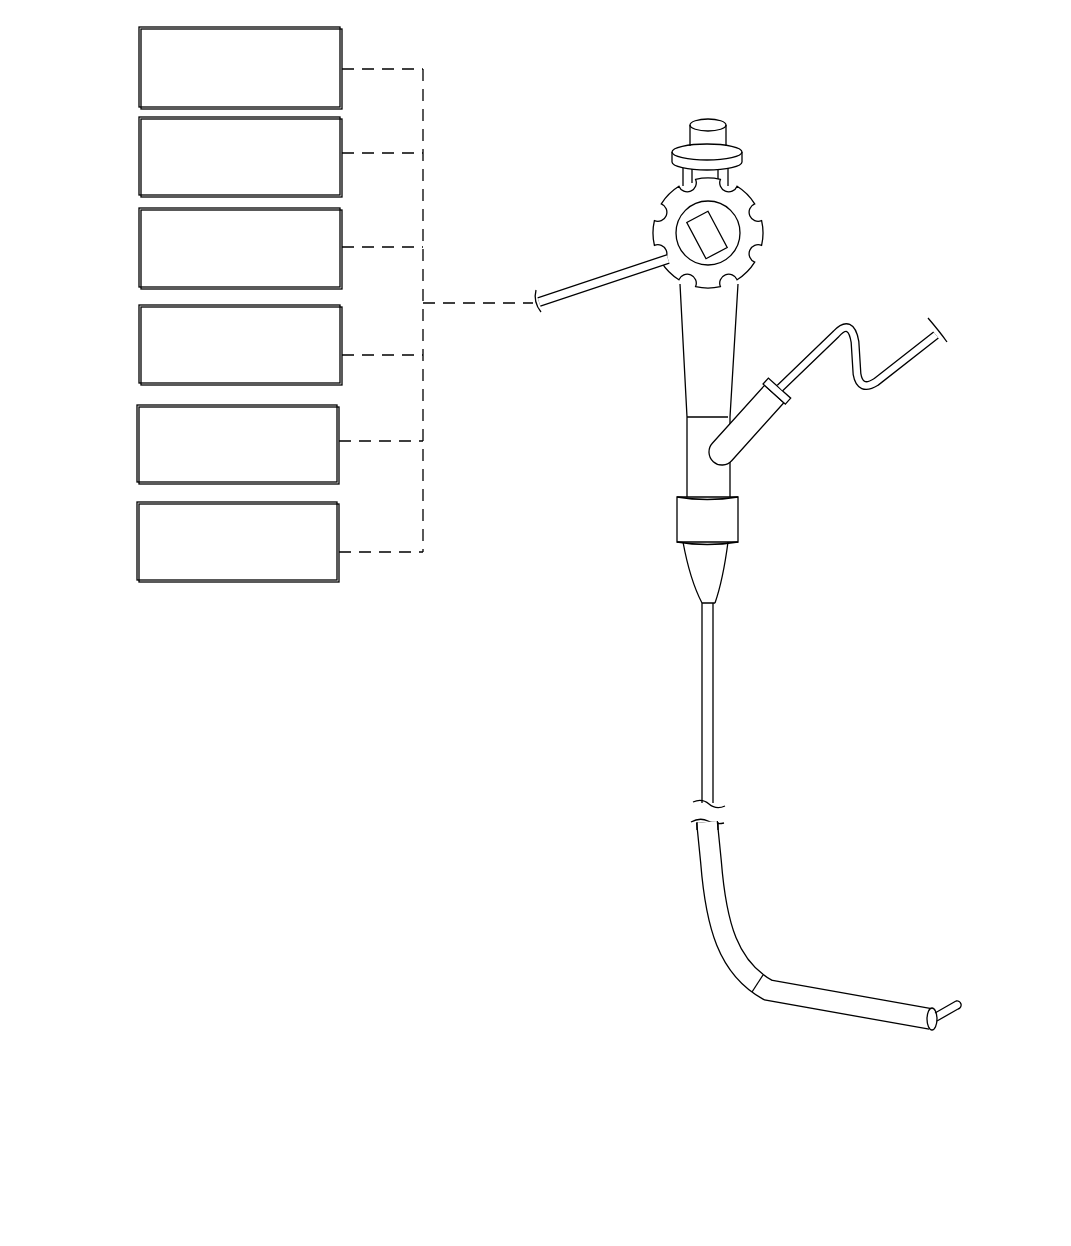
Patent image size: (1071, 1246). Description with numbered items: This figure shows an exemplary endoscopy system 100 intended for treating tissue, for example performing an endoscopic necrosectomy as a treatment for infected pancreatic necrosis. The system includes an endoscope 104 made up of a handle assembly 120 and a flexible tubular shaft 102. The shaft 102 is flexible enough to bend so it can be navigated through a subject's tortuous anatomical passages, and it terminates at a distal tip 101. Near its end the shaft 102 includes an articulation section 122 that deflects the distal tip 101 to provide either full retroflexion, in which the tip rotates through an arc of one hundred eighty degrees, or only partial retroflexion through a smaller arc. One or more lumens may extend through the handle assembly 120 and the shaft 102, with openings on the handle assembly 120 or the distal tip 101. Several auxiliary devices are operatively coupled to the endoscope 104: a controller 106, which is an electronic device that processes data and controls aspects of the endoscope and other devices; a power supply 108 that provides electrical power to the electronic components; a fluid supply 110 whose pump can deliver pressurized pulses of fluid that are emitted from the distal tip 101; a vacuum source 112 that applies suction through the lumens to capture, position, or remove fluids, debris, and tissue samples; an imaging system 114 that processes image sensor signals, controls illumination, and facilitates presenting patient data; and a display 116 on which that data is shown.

The endoscopy system 100 is at (551, 107).
The distal tip 101 is at (872, 1037).
The flexible tubular shaft 102 is at (716, 919).
The endoscope 104 is at (718, 90).
The controller 106 is at (139, 58).
The power supply 108 is at (139, 143).
The fluid supply 110 is at (139, 242).
The vacuum source 112 is at (139, 343).
The imaging system 114 is at (137, 435).
The display 116 is at (137, 537).
The handle assembly 120 is at (773, 294).
The articulation section 122 is at (803, 1006).